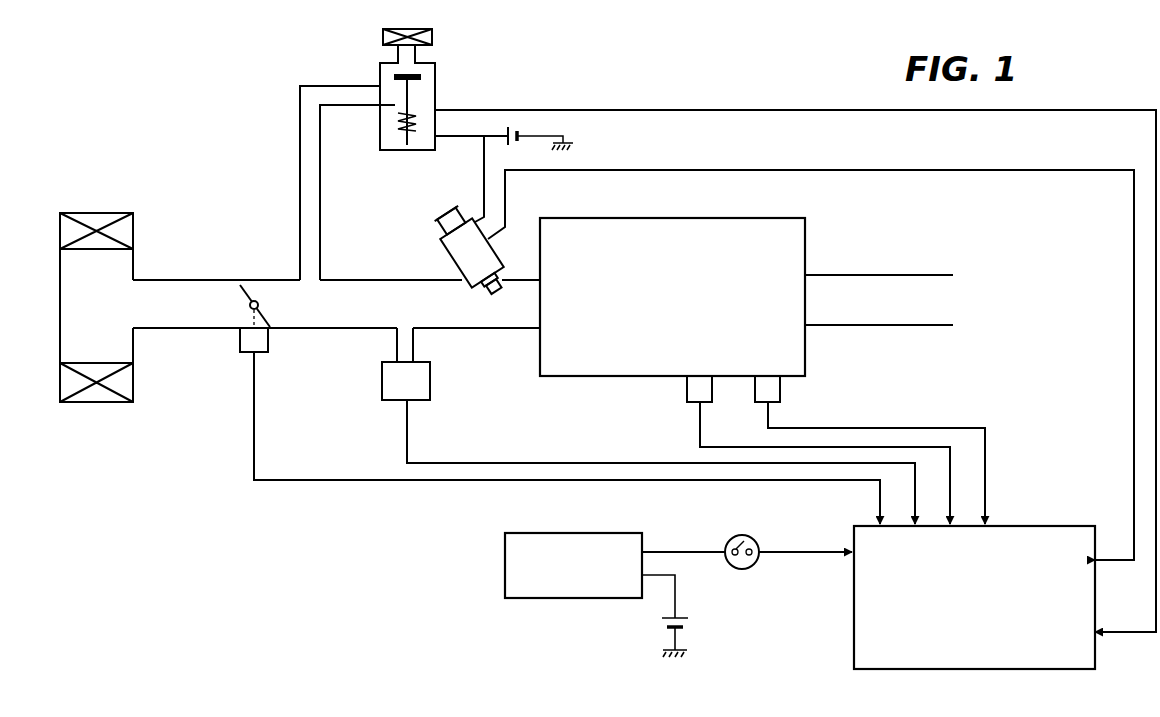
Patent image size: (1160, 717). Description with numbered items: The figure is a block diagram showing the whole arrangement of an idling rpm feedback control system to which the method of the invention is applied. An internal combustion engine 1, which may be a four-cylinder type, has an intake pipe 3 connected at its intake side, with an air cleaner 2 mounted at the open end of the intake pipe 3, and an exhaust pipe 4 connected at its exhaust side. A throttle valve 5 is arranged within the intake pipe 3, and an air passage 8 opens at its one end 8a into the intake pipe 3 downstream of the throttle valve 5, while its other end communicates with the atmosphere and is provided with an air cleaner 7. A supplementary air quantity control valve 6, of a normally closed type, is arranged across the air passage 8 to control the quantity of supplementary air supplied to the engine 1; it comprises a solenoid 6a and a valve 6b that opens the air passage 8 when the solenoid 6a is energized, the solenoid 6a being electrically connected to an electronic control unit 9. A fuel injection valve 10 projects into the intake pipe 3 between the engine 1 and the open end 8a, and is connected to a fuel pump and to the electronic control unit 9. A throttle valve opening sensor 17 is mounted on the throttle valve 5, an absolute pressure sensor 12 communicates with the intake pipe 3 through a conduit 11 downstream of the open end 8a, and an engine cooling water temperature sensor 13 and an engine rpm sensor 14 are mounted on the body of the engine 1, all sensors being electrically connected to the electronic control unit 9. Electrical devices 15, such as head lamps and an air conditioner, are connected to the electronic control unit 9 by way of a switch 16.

The internal combustion engine 1 is at (808, 233).
The air cleaner 2 is at (93, 403).
The intake pipe 3 is at (180, 320).
The exhaust pipe 4 is at (878, 318).
The throttle valve 5 is at (252, 293).
The supplementary air quantity control valve 6 is at (442, 78).
The solenoid 6a is at (400, 132).
The valve 6b is at (395, 77).
The air cleaner 7 is at (434, 35).
The air passage 8 is at (306, 140).
The open end of the air passage 8a is at (310, 287).
The electronic control unit 9 is at (853, 630).
The fuel injection valve 10 is at (450, 255).
The conduit 11 is at (408, 339).
The absolute pressure sensor 12 is at (432, 381).
The engine cooling water temperature sensor 13 is at (686, 396).
The engine rpm sensor 14 is at (782, 390).
The electrical devices 15 is at (546, 598).
The switch 16 is at (746, 570).
The throttle valve opening sensor 17 is at (242, 340).